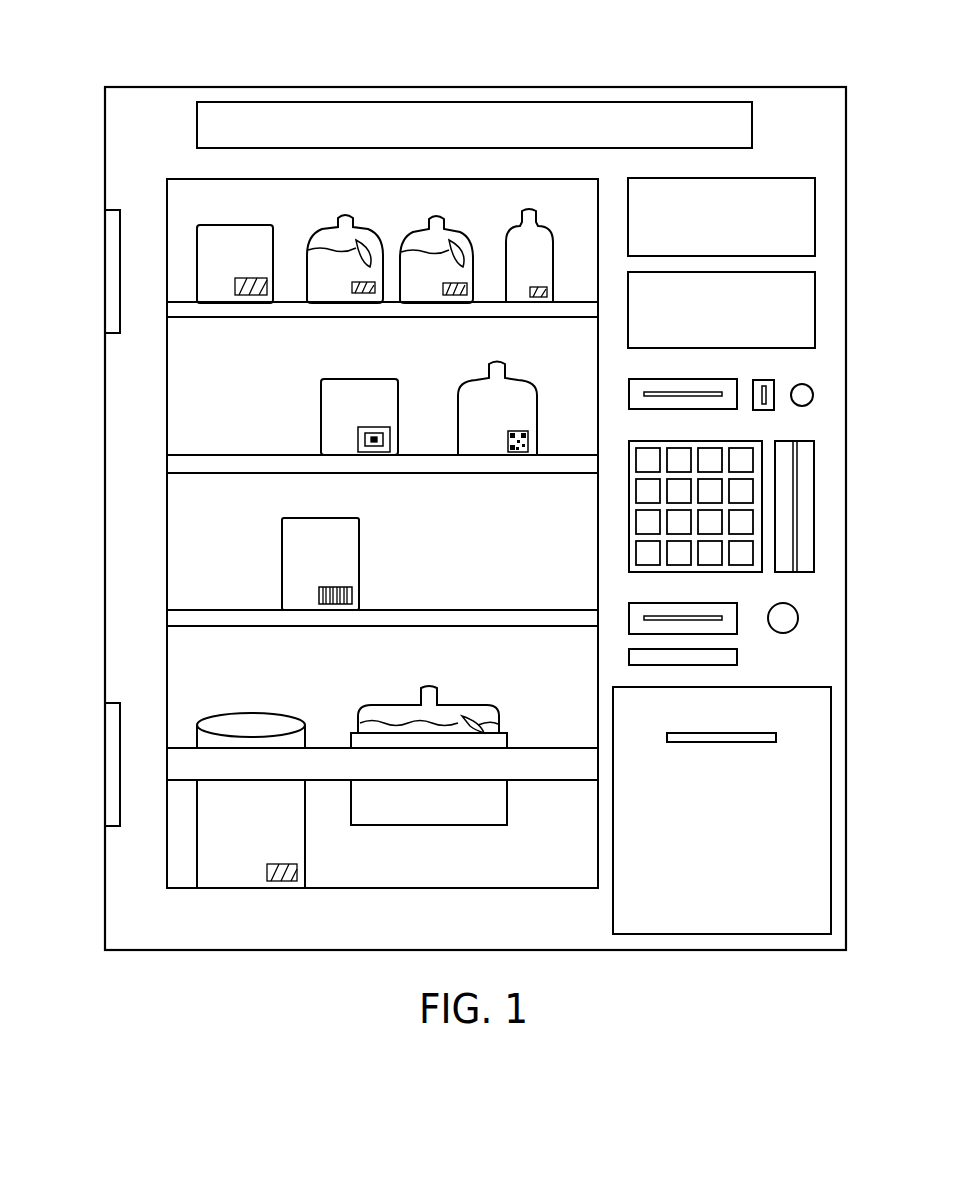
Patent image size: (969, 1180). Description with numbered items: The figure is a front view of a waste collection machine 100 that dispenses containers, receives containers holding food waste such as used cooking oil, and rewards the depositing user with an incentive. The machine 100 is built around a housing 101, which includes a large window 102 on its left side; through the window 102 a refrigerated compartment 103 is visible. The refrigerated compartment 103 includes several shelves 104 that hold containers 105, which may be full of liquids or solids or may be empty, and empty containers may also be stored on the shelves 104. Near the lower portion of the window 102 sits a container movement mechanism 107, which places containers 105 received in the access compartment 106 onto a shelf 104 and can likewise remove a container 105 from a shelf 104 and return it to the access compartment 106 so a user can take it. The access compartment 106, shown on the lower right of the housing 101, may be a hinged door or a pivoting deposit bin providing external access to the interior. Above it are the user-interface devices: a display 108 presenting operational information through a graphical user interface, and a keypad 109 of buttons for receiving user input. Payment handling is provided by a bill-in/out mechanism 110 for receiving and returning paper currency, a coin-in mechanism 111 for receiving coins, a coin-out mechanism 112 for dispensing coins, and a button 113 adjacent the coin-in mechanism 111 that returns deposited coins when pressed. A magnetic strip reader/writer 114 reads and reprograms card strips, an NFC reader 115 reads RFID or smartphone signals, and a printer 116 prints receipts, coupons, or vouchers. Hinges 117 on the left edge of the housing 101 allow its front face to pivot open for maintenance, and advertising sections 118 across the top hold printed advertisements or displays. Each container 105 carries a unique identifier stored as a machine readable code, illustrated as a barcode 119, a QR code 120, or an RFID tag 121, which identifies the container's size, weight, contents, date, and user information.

The waste collection machine 100 is at (212, 39).
The housing 101 is at (120, 117).
The window 102 is at (172, 187).
The refrigerated compartment 103 is at (220, 400).
The shelf 104 is at (289, 310).
The container 105 is at (258, 235).
The access compartment 106 is at (813, 733).
The container movement mechanism 107 is at (516, 720).
The display 108 is at (806, 280).
The keypad 109 is at (630, 447).
The bill-in/out mechanism 110 is at (630, 383).
The coin-in mechanism 111 is at (752, 384).
The coin-out mechanism 112 is at (737, 654).
The button 113 is at (813, 392).
The magnetic strip reader/writer 114 is at (814, 447).
The NFC reader 115 is at (797, 614).
The printer 116 is at (630, 607).
The hinges 117 is at (112, 218).
The advertising sections 118 is at (744, 113).
The barcode 119 is at (352, 596).
The QR code 120 is at (528, 441).
The RFID tag 121 is at (390, 441).